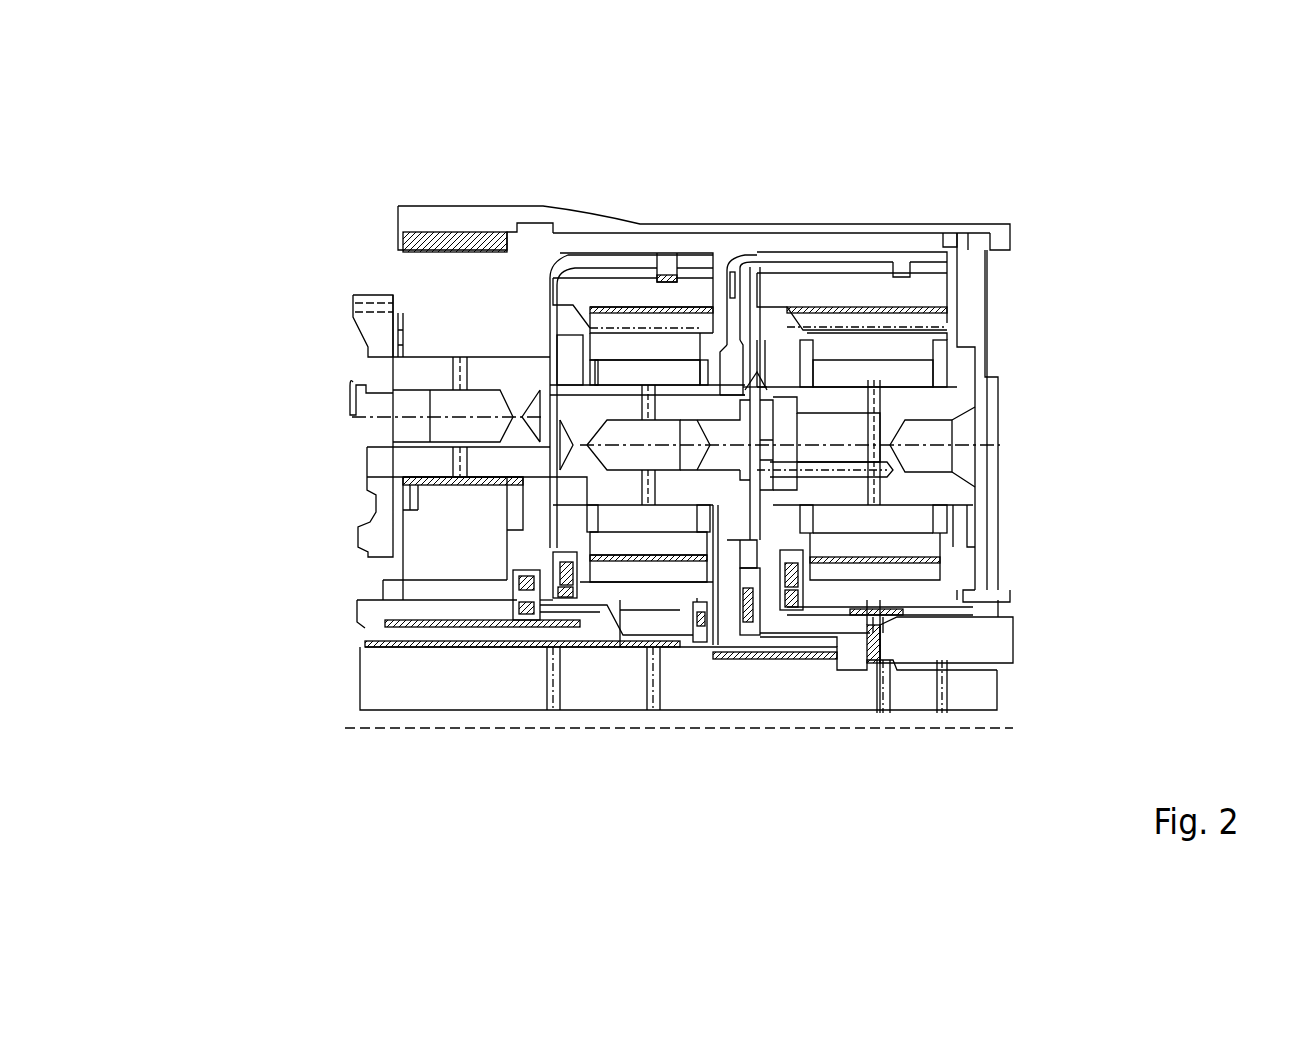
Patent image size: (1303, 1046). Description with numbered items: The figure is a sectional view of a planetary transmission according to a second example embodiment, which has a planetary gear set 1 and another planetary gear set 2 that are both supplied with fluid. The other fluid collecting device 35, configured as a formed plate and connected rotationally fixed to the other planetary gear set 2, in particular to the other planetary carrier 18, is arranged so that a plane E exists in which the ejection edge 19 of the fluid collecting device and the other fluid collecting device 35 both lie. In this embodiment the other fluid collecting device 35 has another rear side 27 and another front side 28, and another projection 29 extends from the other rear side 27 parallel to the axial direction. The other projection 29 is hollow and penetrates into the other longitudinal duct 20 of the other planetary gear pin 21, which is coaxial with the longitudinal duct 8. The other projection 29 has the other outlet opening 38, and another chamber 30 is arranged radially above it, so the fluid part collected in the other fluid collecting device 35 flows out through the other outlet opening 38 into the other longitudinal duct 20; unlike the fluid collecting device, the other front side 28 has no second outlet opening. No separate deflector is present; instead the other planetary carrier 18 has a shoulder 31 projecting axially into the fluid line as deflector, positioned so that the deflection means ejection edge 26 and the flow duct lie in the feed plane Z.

The planetary gear set 1 is at (857, 247).
The other planetary gear set 2 is at (640, 252).
The longitudinal duct 8 is at (822, 478).
The other planetary carrier 18 is at (787, 572).
The ejection edge 19 is at (735, 405).
The other longitudinal duct 20 is at (630, 428).
The other planetary gear pin 21 is at (585, 478).
The deflection means ejection edge 26 is at (850, 560).
The other rear side 27 is at (733, 480).
The other front side 28 is at (840, 433).
The other projection 29 is at (697, 418).
The other chamber 30 is at (752, 330).
The shoulder 31 is at (740, 542).
The other fluid collecting device 35 is at (803, 337).
The other outlet opening 38 is at (585, 478).
The plane E is at (757, 370).
The feed plane Z is at (815, 527).